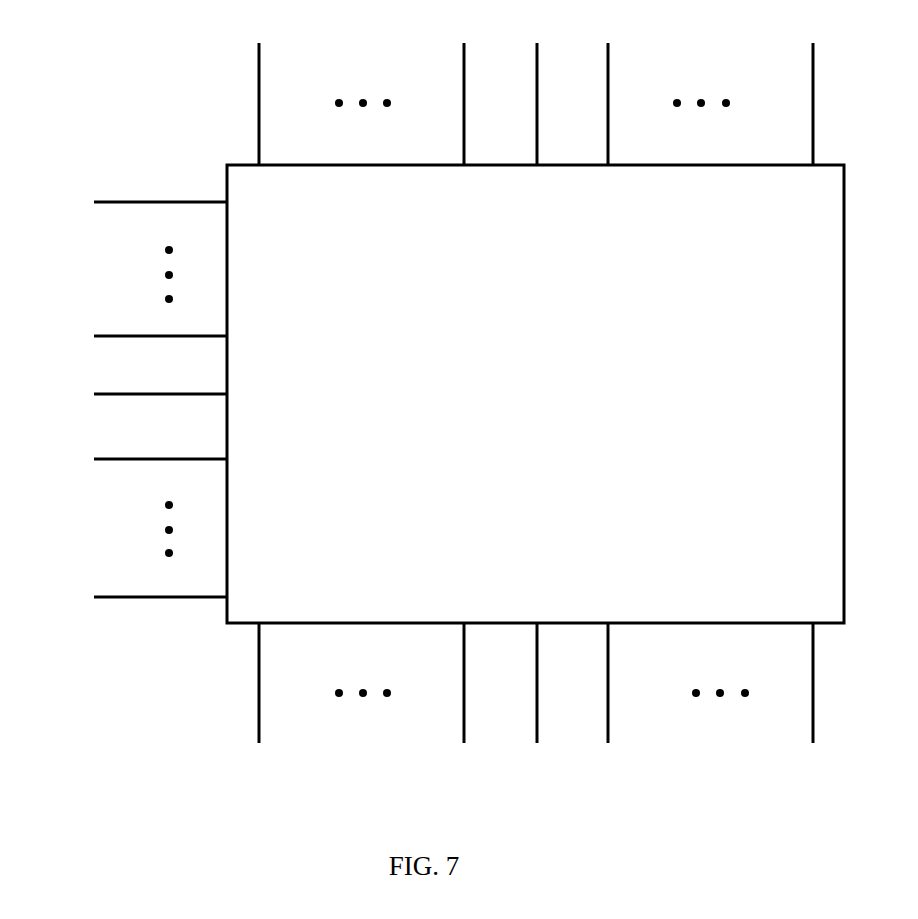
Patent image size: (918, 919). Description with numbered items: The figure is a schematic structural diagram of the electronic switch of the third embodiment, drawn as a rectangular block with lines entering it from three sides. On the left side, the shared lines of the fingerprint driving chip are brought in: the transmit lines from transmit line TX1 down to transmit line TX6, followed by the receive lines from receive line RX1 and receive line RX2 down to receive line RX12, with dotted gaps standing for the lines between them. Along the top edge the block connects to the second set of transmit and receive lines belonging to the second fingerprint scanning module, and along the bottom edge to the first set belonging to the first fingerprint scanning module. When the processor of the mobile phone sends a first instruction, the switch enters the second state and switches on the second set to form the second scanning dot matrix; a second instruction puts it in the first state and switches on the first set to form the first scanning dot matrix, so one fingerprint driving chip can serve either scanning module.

The transmit line TX1 is at (135, 201).
The transmit line TX6 is at (134, 337).
The receive line RX1 is at (132, 394).
The receive line RX2 is at (132, 458).
The receive line RX12 is at (129, 597).